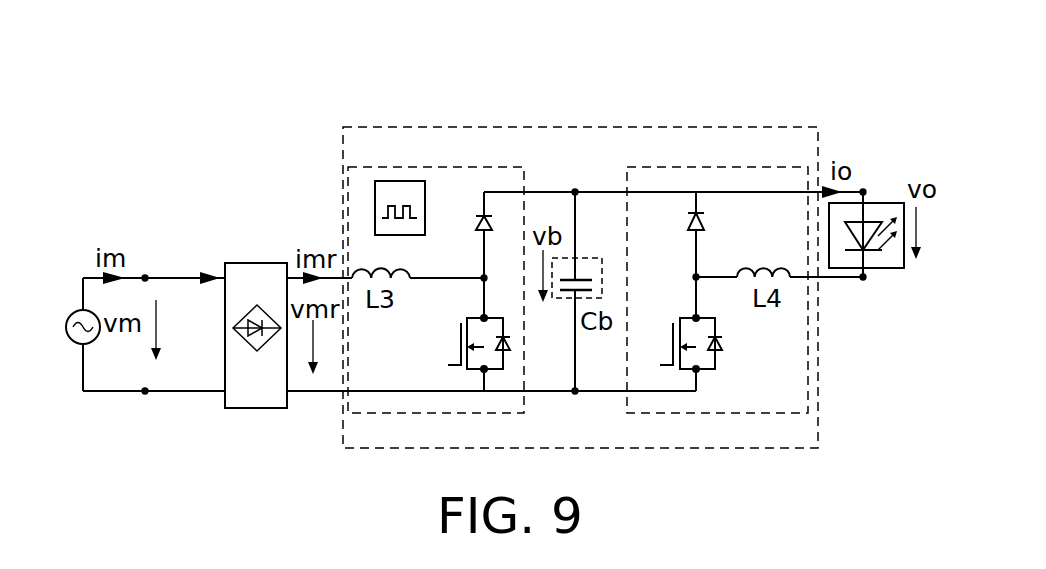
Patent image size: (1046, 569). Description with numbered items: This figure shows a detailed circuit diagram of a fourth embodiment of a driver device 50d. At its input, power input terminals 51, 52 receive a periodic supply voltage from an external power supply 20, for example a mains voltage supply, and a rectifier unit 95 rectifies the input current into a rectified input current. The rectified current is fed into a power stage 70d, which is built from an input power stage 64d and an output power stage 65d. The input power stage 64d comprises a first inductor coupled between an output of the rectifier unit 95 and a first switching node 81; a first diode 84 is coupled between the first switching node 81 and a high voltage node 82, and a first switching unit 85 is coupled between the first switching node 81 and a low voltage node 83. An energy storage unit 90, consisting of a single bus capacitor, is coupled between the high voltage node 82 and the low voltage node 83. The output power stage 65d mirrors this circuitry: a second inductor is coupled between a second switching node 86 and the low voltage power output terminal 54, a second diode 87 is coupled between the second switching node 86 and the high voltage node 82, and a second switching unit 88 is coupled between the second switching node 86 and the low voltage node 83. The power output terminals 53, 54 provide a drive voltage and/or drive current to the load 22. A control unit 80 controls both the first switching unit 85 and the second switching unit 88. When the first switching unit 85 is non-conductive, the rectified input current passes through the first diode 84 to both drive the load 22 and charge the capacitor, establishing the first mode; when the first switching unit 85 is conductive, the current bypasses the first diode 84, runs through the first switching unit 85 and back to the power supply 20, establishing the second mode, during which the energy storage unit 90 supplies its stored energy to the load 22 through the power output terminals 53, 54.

The driver device 50d is at (830, 93).
The power stage 70d is at (668, 127).
The input power stage 64d is at (438, 167).
The output power stage 65d is at (763, 167).
The external power supply 20 is at (95, 343).
The power input terminal 51 is at (145, 278).
The power input terminal 52 is at (145, 391).
The rectifier unit 95 is at (252, 263).
The control unit 80 is at (375, 218).
The first diode 84 is at (477, 218).
The first switching node 81 is at (484, 278).
The high voltage node 82 is at (575, 192).
The energy storage unit 90 is at (595, 258).
The low voltage node 83 is at (575, 391).
The first switching unit 85 is at (510, 358).
The second diode 87 is at (700, 216).
The second switching node 86 is at (696, 277).
The second switching unit 88 is at (720, 360).
The power output terminal 53 is at (863, 192).
The low voltage power output terminal 54 is at (863, 277).
The load 22 is at (880, 268).